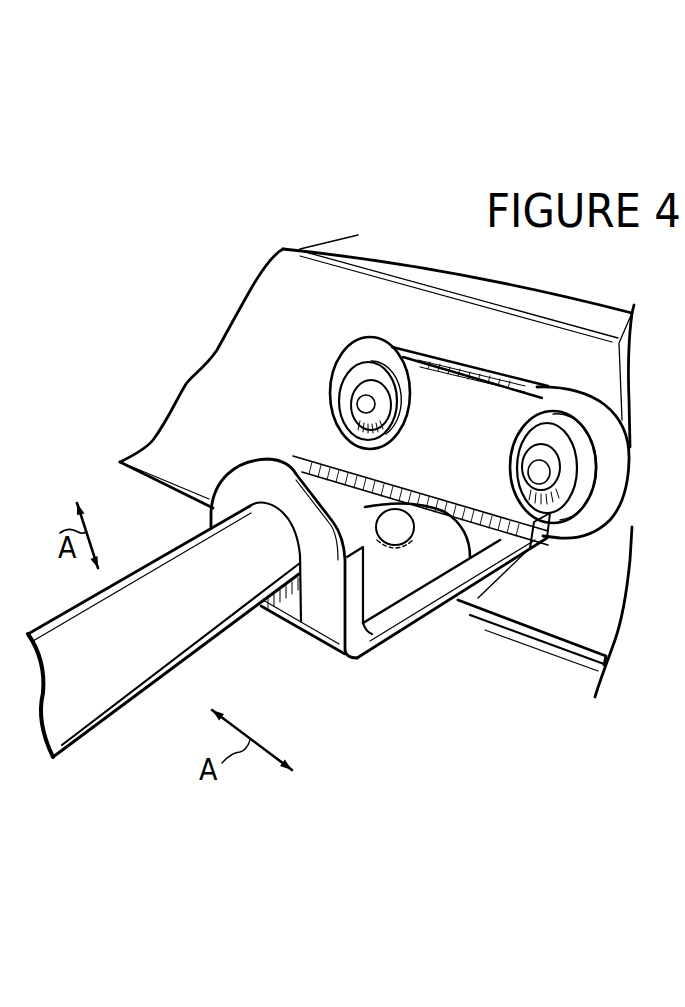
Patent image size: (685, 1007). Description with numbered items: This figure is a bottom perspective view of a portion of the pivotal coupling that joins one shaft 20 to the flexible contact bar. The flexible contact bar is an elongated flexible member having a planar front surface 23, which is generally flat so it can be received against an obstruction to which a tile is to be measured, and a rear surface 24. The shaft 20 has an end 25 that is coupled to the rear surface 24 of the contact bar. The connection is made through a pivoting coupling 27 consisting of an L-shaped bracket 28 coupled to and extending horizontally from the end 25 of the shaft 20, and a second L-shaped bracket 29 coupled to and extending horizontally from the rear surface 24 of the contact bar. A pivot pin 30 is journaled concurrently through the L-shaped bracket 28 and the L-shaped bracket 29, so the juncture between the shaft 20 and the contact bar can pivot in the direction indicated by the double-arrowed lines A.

The shaft 20 is at (70, 703).
The planar front surface 23 is at (408, 255).
The rear surface 24 is at (289, 291).
The end 25 is at (267, 570).
The pivoting coupling 27 is at (472, 662).
The L-shaped bracket 28 is at (393, 618).
The L-shaped bracket 29 is at (437, 610).
The pivot pin 30 is at (482, 612).